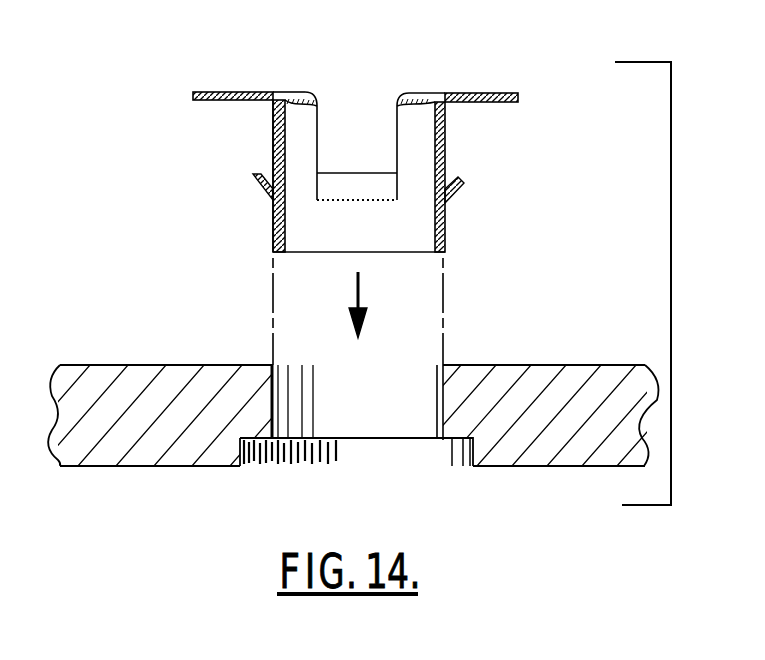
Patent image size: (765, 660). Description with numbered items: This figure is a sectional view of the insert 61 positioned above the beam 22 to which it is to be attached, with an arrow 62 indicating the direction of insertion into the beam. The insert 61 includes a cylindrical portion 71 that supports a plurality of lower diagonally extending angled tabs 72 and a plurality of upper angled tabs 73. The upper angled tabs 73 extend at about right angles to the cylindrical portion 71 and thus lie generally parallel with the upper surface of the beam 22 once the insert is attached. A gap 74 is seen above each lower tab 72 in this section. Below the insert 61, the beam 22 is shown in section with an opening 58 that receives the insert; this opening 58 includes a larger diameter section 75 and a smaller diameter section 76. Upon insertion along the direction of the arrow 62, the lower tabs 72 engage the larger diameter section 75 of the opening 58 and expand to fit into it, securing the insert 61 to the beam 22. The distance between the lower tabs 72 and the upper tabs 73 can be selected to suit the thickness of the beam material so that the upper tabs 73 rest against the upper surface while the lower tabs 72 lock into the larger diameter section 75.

The beam 22 is at (150, 365).
The opening 58 is at (268, 476).
The insert 61 is at (445, 148).
The insertion direction arrow 62 is at (360, 292).
The cylindrical portion 71 is at (273, 225).
The lower diagonally extending angled tabs 72 is at (254, 178).
The upper angled tabs 73 is at (213, 92).
The gap 74 is at (342, 136).
The larger diameter section 75 is at (440, 467).
The smaller diameter section 76 is at (330, 378).